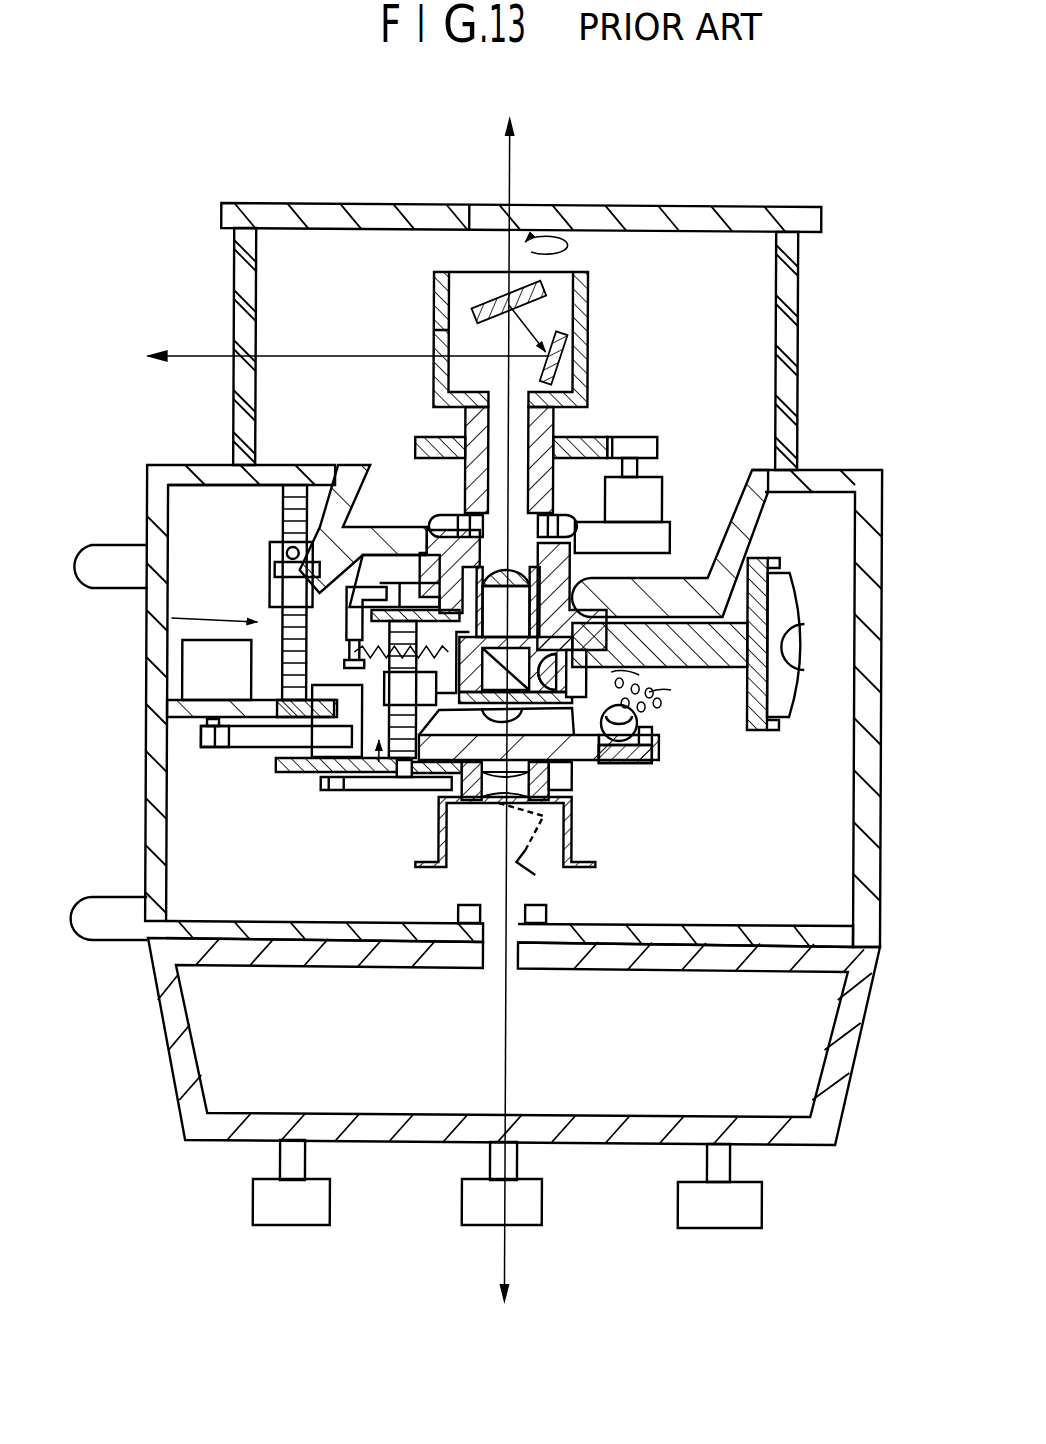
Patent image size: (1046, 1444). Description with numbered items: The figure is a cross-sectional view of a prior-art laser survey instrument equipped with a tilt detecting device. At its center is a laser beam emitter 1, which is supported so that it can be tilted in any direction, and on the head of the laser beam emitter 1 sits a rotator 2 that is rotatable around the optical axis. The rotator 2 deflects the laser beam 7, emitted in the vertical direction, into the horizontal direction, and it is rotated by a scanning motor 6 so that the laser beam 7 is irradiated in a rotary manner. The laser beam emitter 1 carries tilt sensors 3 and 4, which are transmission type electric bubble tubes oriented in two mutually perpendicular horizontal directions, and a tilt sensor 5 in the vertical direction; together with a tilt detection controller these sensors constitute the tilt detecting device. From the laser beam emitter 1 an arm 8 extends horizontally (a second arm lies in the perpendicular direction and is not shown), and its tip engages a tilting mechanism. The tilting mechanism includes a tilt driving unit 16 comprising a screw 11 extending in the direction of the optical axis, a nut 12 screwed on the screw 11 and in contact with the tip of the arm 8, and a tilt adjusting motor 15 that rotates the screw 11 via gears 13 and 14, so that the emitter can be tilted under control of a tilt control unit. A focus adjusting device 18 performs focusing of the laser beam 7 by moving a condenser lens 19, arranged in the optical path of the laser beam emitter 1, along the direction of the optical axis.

The laser beam emitter 1 is at (587, 568).
The rotator 2 is at (588, 292).
The tilt sensor 3 is at (462, 720).
The tilt sensor 4 is at (602, 672).
The tilt sensor 5 is at (770, 700).
The scanning motor 6 is at (662, 490).
The laser beam 7 is at (290, 356).
The arm 8 is at (390, 540).
The screw 11 is at (283, 522).
The nut 12 is at (270, 568).
The gear 13 is at (218, 745).
The gear 14 is at (262, 738).
The tilt adjusting motor 15 is at (195, 672).
The tilt driving unit 16 is at (172, 618).
The focus adjusting device 18 is at (405, 740).
The condenser lens 19 is at (510, 567).